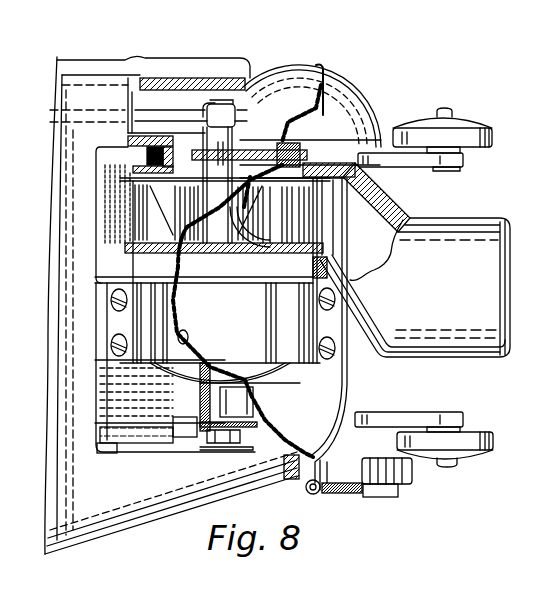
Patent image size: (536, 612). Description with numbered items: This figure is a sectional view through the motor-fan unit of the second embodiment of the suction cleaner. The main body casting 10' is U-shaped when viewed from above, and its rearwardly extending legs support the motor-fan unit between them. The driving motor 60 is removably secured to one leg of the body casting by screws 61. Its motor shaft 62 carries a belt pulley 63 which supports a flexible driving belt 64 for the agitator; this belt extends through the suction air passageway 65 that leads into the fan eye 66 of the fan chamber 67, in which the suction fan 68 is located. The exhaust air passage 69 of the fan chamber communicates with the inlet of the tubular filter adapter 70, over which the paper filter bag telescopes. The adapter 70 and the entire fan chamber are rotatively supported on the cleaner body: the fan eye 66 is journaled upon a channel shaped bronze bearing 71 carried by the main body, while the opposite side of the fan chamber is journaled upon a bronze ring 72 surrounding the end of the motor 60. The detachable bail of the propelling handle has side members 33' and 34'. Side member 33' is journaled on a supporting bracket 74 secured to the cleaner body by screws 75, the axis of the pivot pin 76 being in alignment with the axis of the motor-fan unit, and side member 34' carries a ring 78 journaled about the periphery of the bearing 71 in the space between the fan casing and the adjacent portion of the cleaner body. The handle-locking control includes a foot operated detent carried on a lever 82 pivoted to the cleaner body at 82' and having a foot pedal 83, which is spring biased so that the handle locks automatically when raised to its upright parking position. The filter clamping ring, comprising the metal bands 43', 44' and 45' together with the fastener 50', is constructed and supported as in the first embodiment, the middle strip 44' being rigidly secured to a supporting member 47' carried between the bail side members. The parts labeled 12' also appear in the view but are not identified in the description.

The main body casting 10' is at (171, 305).
The control knob 12' is at (428, 279).
The side member 33' is at (175, 373).
The side member 34' is at (187, 141).
The light metal band 43' is at (277, 434).
The middle strip 44' is at (247, 271).
The light metal band 45' is at (348, 90).
The supporting member 47' is at (180, 347).
The thumb screw fastener 50' is at (338, 493).
The driving motor 60 is at (212, 274).
The screws 61 is at (110, 300).
The motor shaft 62 is at (240, 133).
The belt pulley 63 is at (228, 92).
The flexible driving belt 64 is at (176, 118).
The suction air passageway 65 is at (209, 107).
The fan eye 66 is at (301, 168).
The fan chamber 67 is at (365, 190).
The suction fan 68 is at (224, 230).
The exhaust air passage 69 is at (376, 250).
The tubular filter adapter 70 is at (415, 287).
The channel shaped bronze bearing 71 is at (291, 148).
The bronze ring 72 is at (346, 281).
The supporting bracket 74 is at (238, 448).
The screws 75 is at (205, 448).
The pivot pin 76 is at (197, 430).
The ring 78 is at (304, 142).
The lever 82 is at (320, 330).
The pivot 82' is at (100, 463).
The foot pedal 83 is at (408, 475).